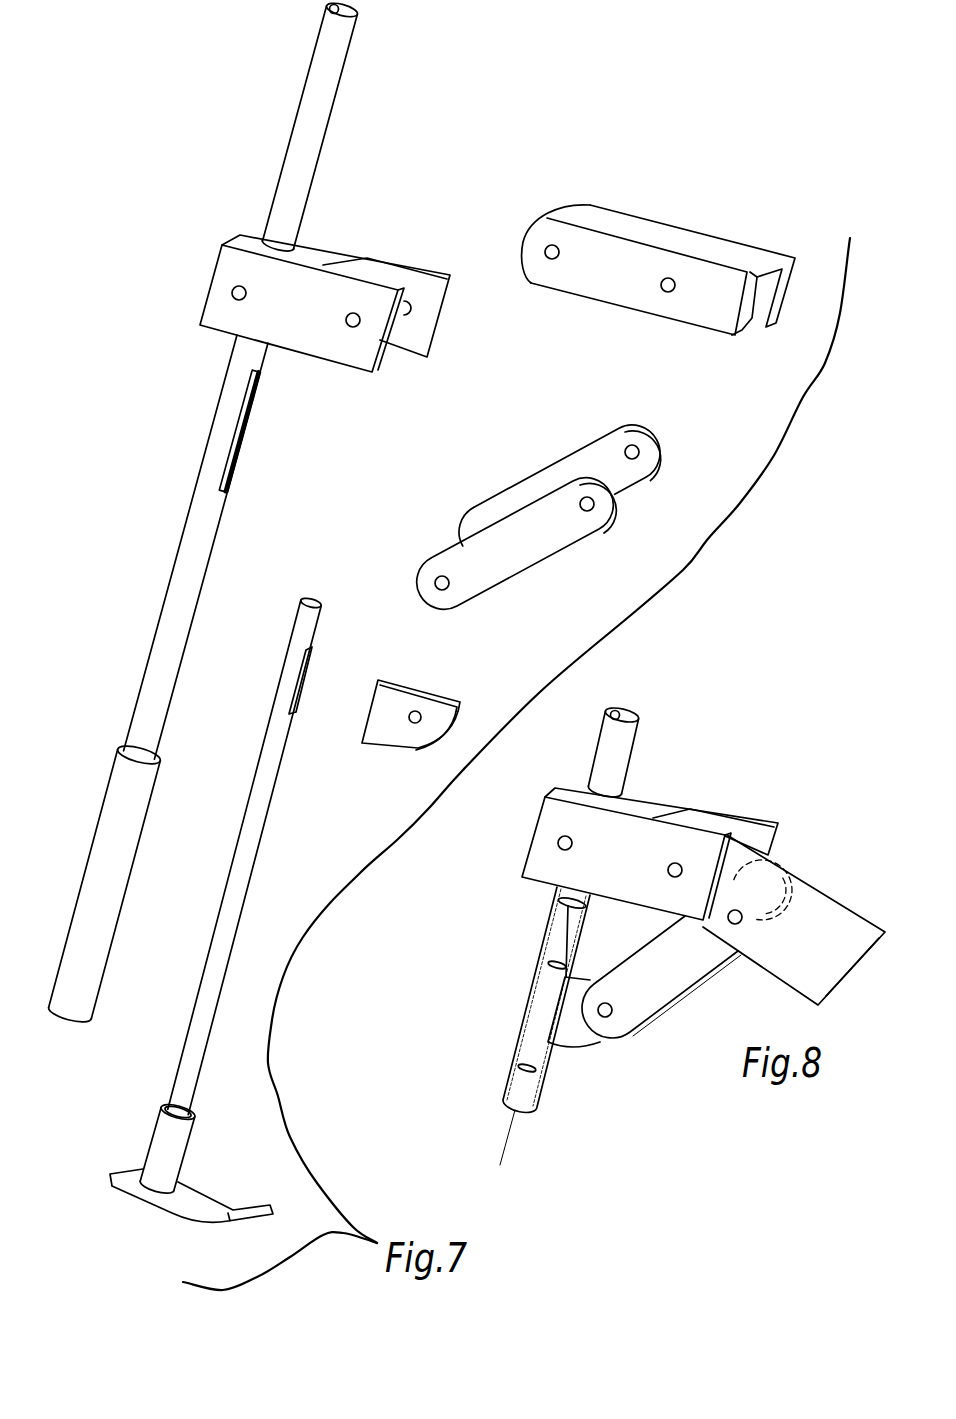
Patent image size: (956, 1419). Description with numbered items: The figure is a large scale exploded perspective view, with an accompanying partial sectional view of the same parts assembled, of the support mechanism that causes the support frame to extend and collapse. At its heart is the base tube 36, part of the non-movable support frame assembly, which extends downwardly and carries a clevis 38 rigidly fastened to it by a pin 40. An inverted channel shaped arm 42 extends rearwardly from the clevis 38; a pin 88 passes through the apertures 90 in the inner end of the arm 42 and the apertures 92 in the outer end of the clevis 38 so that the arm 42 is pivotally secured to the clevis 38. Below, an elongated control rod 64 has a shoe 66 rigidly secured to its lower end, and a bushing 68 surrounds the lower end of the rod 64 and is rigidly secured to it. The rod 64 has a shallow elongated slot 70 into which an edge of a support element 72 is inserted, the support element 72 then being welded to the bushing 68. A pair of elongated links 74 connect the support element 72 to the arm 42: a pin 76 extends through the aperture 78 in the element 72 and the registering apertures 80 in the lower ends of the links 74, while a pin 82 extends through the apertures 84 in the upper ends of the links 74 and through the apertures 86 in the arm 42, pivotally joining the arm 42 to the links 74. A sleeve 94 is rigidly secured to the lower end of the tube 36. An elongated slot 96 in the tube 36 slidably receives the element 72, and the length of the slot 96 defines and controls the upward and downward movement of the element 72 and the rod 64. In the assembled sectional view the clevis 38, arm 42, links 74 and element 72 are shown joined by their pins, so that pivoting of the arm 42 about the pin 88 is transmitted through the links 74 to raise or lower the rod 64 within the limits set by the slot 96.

In FIG. 7, the base tube 36 is at (188, 578).
In FIG. 8, the base tube 36 is at (608, 754).
In FIG. 7, the clevis 38 is at (221, 263).
In FIG. 8, the clevis 38 is at (545, 812).
In FIG. 7, the pin 40 is at (236, 298).
In FIG. 8, the pin 40 is at (561, 849).
In FIG. 7, the inverted channel shaped arm 42 is at (693, 242).
In FIG. 8, the inverted channel shaped arm 42 is at (821, 907).
In FIG. 7, the control rod 64 is at (202, 1027).
In FIG. 8, the control rod 64 is at (545, 1001).
In FIG. 7, the shoe 66 is at (187, 1222).
In FIG. 7, the bushing 68 is at (162, 1118).
In FIG. 7, the slot 70 is at (309, 666).
In FIG. 7, the support element 72 is at (440, 698).
In FIG. 8, the support element 72 is at (577, 1032).
In FIG. 7, the links 74 is at (552, 466).
In FIG. 8, the links 74 is at (645, 1014).
In FIG. 8, the pin 76 is at (608, 1017).
In FIG. 7, the aperture 78 is at (409, 721).
In FIG. 7, the apertures 80 is at (436, 583).
In FIG. 8, the pin 82 is at (734, 925).
In FIG. 7, the apertures 84 is at (635, 446).
In FIG. 7, the apertures 86 is at (660, 287).
In FIG. 8, the pin 88 is at (671, 866).
In FIG. 7, the apertures 90 is at (546, 254).
In FIG. 7, the apertures 92 is at (350, 314).
In FIG. 7, the sleeve 94 is at (112, 810).
In FIG. 7, the slot 96 is at (244, 432).